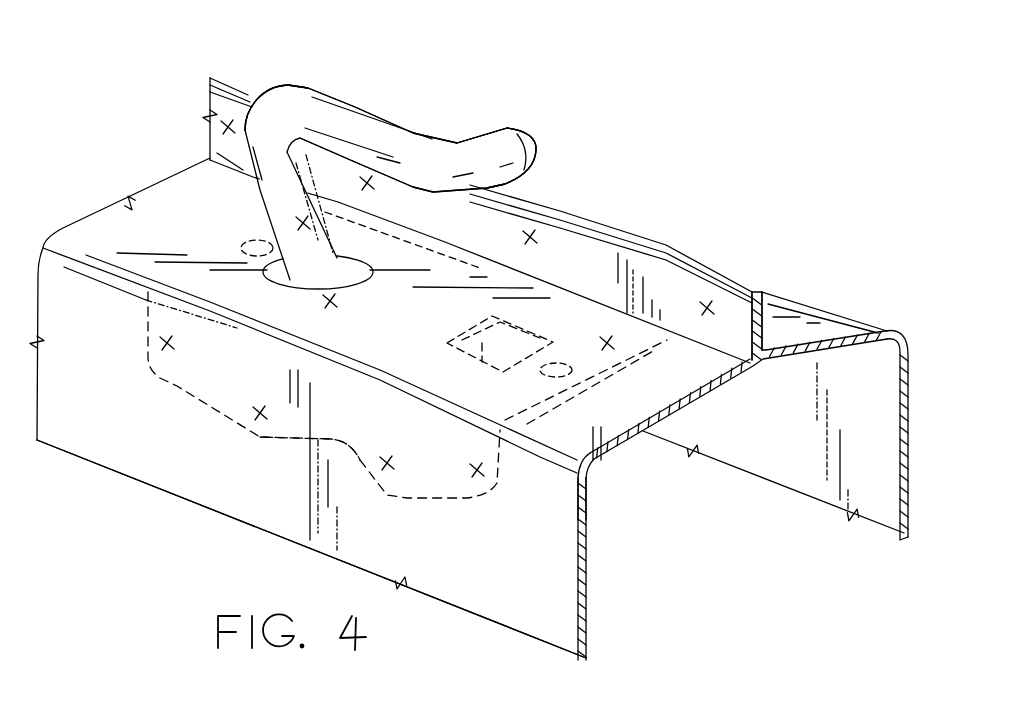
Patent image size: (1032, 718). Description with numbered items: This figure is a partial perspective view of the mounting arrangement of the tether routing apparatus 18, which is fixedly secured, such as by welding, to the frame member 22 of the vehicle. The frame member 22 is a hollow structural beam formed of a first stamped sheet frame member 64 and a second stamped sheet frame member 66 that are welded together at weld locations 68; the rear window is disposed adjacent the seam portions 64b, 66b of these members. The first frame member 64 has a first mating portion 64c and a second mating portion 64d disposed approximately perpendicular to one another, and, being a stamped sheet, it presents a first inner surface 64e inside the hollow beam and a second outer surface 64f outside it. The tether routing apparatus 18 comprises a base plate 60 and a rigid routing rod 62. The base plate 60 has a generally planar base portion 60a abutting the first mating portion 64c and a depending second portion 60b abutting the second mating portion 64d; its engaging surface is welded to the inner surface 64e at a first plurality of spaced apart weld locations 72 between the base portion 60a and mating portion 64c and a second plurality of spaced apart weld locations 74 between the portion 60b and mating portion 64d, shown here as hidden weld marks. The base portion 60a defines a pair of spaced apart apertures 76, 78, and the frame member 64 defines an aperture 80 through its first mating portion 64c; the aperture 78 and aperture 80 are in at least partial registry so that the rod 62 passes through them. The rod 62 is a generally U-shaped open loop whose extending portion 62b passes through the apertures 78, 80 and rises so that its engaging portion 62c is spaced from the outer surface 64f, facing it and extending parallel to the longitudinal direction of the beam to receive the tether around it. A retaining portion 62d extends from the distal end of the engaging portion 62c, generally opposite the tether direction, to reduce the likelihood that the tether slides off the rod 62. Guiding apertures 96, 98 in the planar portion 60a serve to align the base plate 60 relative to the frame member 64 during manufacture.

The tether routing apparatus 18 is at (505, 113).
The frame member 22 is at (533, 617).
The base plate 60 is at (195, 395).
The first generally planar base portion 60a is at (450, 310).
The second portion 60b is at (307, 447).
The rigid routing rod 62 is at (353, 100).
The extending portion 62b is at (210, 160).
The engaging portion 62c is at (333, 117).
The retaining portion 62d is at (517, 148).
The first stamped sheet frame member 64 is at (493, 597).
The seam portion 64b is at (742, 332).
The first mating portion 64c is at (697, 402).
The second mating portion 64d is at (587, 550).
The first inner surface 64e is at (620, 440).
The second outer surface 64f is at (600, 423).
The second stamped sheet frame member 66 is at (807, 473).
The seam portion 66b is at (767, 317).
The weld locations 68 is at (223, 117).
The first plurality of spaced apart weld locations 72 is at (265, 213).
The second plurality of spaced apart weld locations 74 is at (157, 346).
The aperture 76 is at (548, 325).
The aperture 78 is at (337, 305).
The aperture 80 is at (352, 267).
The guiding aperture 96 is at (245, 235).
The guiding aperture 98 is at (578, 376).